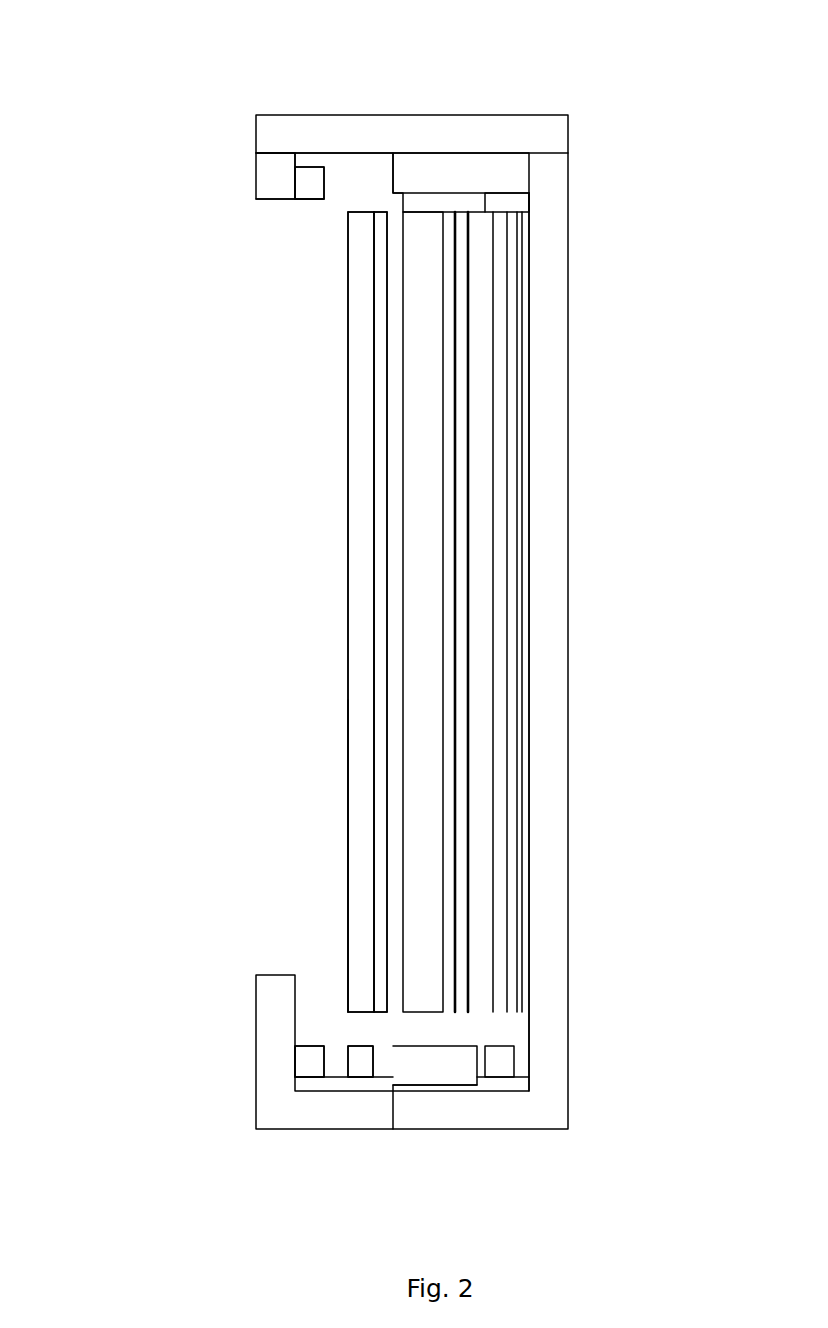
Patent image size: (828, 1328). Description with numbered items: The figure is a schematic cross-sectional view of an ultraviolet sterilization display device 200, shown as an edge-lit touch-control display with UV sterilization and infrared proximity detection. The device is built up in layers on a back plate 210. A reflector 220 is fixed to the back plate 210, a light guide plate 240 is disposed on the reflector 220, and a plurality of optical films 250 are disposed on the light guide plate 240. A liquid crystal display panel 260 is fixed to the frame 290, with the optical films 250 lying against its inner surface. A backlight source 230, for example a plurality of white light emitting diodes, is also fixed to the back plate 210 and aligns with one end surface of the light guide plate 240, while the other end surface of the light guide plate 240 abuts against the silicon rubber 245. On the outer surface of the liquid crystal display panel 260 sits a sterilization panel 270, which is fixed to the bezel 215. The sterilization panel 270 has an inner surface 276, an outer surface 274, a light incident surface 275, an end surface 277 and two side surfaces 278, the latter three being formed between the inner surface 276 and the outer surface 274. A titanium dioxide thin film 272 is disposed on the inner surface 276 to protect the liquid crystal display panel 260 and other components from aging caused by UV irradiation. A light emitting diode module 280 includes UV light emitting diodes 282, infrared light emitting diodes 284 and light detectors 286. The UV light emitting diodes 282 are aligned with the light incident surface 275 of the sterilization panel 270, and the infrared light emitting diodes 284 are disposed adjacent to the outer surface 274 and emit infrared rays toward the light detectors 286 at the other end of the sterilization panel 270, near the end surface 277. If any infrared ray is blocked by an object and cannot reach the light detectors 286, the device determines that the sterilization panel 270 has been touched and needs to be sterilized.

The ultraviolet sterilization display device 200 is at (163, 55).
The back plate 210 is at (549, 515).
The bezel 215 is at (275, 178).
The reflector 220 is at (518, 460).
The backlight source 230 is at (498, 1068).
The light guide plate 240 is at (500, 405).
The silicon rubber 245 is at (495, 205).
The optical films 250 is at (469, 347).
The liquid crystal display panel 260 is at (412, 415).
The sterilization panel 270 is at (360, 588).
The titanium dioxide thin film 272 is at (378, 502).
The outer surface 274 is at (348, 768).
The light incident surface 275 is at (360, 1012).
The inner surface 276 is at (374, 802).
The end surface 277 is at (360, 212).
The side surfaces 278 is at (360, 838).
The light emitting diode module 280 is at (403, 1170).
The UV light emitting diodes 282 is at (365, 1068).
The infrared light emitting diodes 284 is at (310, 1068).
The light detectors 286 is at (306, 180).
The frame 290 is at (428, 205).